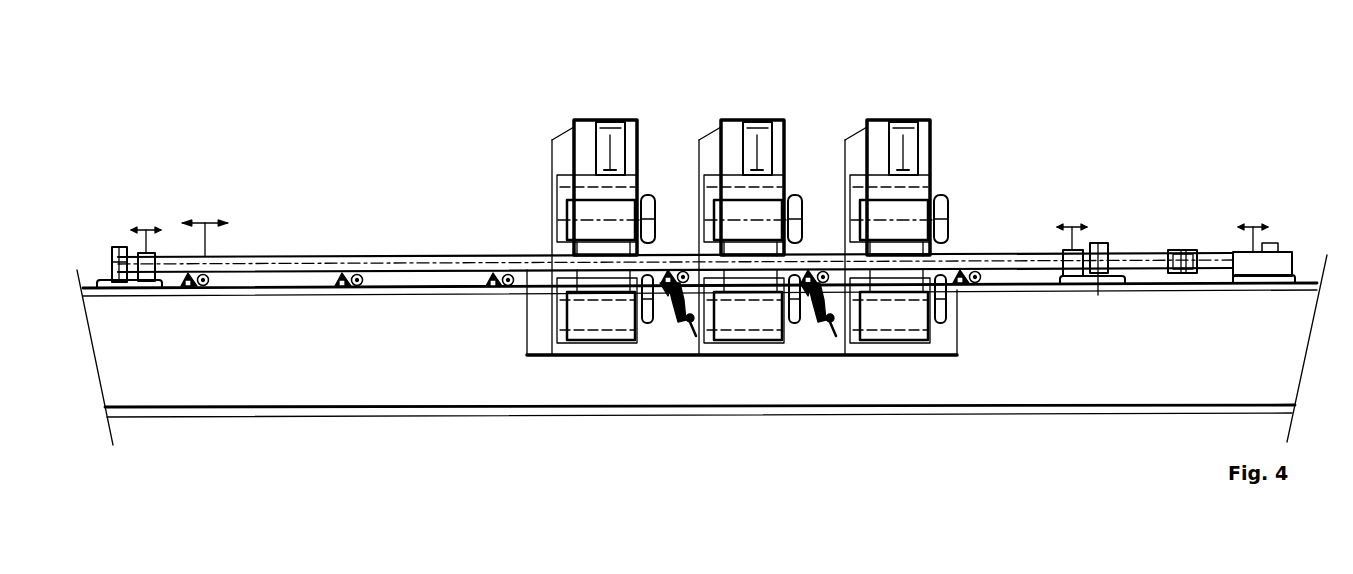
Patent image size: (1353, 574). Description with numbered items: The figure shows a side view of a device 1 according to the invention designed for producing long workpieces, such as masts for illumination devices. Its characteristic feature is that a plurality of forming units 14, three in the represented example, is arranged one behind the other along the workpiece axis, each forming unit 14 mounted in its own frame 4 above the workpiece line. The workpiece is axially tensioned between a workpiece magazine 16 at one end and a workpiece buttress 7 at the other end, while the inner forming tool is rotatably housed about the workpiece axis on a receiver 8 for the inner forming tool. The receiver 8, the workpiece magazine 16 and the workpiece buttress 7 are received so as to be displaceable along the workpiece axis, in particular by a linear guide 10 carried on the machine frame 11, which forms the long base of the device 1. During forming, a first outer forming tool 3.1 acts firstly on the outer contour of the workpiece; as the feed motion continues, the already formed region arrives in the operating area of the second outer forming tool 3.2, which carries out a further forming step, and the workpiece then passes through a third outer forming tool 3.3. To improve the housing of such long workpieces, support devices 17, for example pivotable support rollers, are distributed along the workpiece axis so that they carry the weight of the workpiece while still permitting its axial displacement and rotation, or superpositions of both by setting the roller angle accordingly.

The device 1 is at (1049, 72).
The first outer forming tool 3.1 is at (942, 193).
The second outer forming tool 3.2 is at (797, 193).
The third outer forming tool 3.3 is at (651, 193).
The roller frame 4 is at (575, 185).
The workpiece buttress 7 is at (140, 256).
The receiver for the inner forming tool 8 is at (1290, 253).
The linear guide 10 is at (148, 293).
The machine frame 11 is at (410, 412).
The forming unit 14 is at (600, 120).
The workpiece magazine 16 is at (1080, 258).
The support device 17 is at (355, 290).